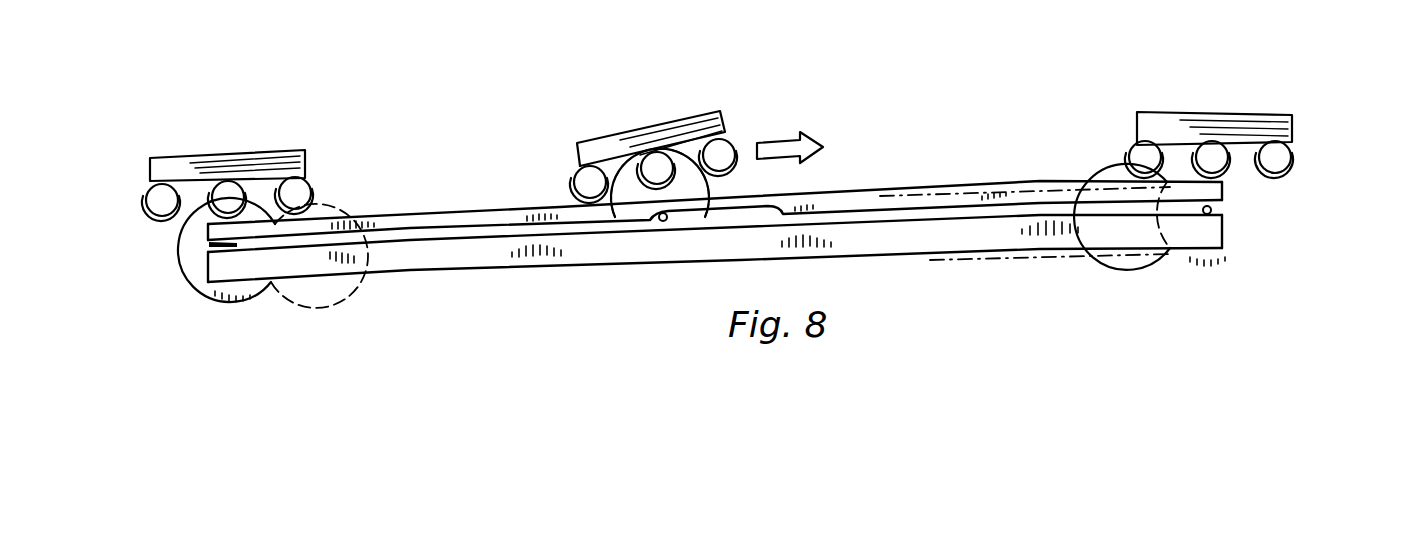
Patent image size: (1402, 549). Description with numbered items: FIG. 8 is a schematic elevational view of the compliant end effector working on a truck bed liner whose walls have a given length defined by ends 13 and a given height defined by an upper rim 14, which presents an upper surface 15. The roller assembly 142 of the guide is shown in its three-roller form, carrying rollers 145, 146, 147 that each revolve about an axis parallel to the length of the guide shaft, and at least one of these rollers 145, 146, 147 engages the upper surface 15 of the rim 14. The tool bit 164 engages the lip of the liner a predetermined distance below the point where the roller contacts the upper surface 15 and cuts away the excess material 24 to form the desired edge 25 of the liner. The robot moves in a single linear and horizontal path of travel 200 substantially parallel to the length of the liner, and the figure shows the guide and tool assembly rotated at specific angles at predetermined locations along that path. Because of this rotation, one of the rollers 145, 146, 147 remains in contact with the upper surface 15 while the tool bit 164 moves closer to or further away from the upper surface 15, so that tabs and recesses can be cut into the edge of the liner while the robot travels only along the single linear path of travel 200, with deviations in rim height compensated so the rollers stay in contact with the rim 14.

The ends 13 is at (207, 292).
The upper rim 14 is at (388, 210).
The upper surface 15 is at (445, 207).
The excess material 24 is at (362, 263).
The desired edge 25 is at (475, 233).
The roller assembly 142 is at (195, 158).
The roller 145 is at (300, 187).
The roller 146 is at (232, 188).
The roller 147 is at (150, 198).
The tool bit 164 is at (233, 244).
The linear path of travel 200 is at (808, 133).